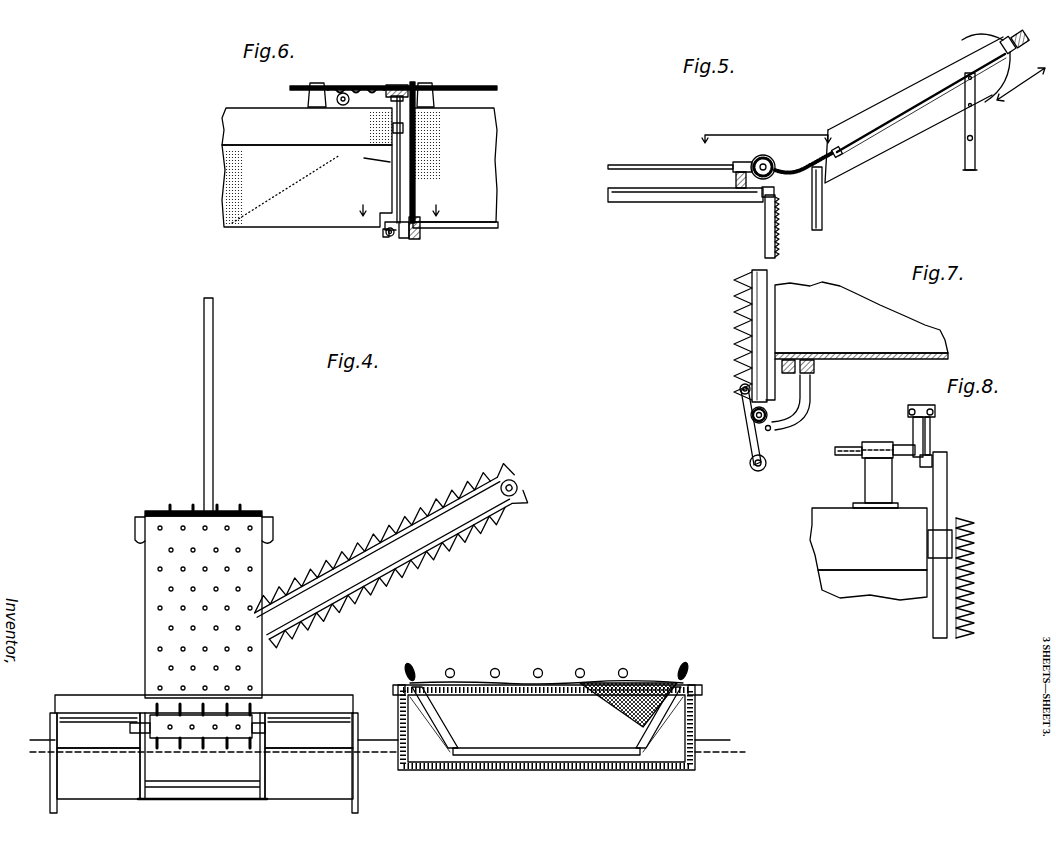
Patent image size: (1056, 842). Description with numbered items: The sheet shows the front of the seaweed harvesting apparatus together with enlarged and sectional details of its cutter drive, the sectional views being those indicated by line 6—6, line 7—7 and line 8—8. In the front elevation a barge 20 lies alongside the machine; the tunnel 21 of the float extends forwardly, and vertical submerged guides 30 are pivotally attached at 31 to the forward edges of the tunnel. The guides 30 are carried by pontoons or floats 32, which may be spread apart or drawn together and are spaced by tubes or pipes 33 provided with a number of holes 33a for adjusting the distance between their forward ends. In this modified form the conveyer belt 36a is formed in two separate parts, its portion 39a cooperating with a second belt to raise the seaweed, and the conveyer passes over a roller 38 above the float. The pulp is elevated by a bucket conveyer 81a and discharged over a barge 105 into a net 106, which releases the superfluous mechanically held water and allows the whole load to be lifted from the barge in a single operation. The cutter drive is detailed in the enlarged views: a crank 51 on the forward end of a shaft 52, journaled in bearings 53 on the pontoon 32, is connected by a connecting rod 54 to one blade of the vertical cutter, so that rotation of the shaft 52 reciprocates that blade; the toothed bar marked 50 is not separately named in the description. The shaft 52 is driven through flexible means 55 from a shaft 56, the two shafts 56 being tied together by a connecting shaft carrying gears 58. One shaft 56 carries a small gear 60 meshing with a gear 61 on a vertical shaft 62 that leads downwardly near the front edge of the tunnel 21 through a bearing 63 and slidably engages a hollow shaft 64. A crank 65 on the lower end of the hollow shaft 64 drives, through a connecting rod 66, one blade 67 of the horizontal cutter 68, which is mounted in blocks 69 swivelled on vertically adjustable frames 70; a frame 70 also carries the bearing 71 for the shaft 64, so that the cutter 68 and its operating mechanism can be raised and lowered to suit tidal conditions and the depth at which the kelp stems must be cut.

In FIG. 5, the section line 6 is at (766, 127).
In FIG. 6, the section line 7 is at (400, 205).
In FIG. 5, the section line 8 is at (1021, 97).
In FIG. 4, the barge 20 is at (90, 687).
In FIG. 6, the tunnel 21 is at (455, 168).
In FIG. 7, the tunnel 21 is at (861, 320).
In FIG. 6, the submerged guides 30 is at (307, 186).
In FIG. 8, the submerged guides 30 is at (872, 585).
In FIG. 4, the submerged guides 30 is at (205, 773).
In FIG. 5, the pivot 31 is at (765, 212).
In FIG. 5, the pontoons 32 is at (893, 142).
In FIG. 8, the pontoons 32 is at (868, 539).
In FIG. 4, the pontoons 32 is at (360, 680).
In FIG. 6, the pipes 33 is at (344, 92).
In FIG. 5, the pipes 33 is at (975, 165).
In FIG. 5, the holes 33a is at (976, 138).
In FIG. 4, the conveyer belt 36a is at (269, 581).
In FIG. 4, the roller 38 is at (265, 514).
In FIG. 4, the conveyer portion 39a is at (387, 673).
In FIG. 8, the rack bar 50 is at (970, 514).
In FIG. 5, the crank 51 is at (975, 37).
In FIG. 8, the crank 51 is at (913, 430).
In FIG. 6, the shaft 52 is at (316, 85).
In FIG. 5, the shaft 52 is at (918, 96).
In FIG. 8, the shaft 52 is at (849, 456).
In FIG. 6, the bearings 53 is at (307, 126).
In FIG. 5, the bearings 53 is at (915, 83).
In FIG. 8, the bearings 53 is at (874, 441).
In FIG. 5, the connecting rod 54 is at (1022, 36).
In FIG. 8, the connecting rod 54 is at (931, 432).
In FIG. 6, the flexible means 55 is at (372, 88).
In FIG. 5, the flexible means 55 is at (793, 178).
In FIG. 6, the shaft 56 is at (465, 86).
In FIG. 5, the shaft 56 is at (645, 164).
In FIG. 7, the gears 58 is at (721, 360).
In FIG. 6, the small gear 60 is at (428, 84).
In FIG. 5, the small gear 60 is at (745, 162).
In FIG. 6, the gear 61 is at (403, 86).
In FIG. 5, the gear 61 is at (772, 155).
In FIG. 6, the vertical shaft 62 is at (367, 157).
In FIG. 6, the bearing 63 is at (392, 126).
In FIG. 6, the hollow shaft 64 is at (396, 178).
In FIG. 7, the hollow shaft 64 is at (750, 418).
In FIG. 6, the crank 65 is at (421, 234).
In FIG. 7, the crank 65 is at (739, 402).
In FIG. 7, the connecting rod 66 is at (744, 440).
In FIG. 6, the blade 67 is at (384, 235).
In FIG. 7, the blade 67 is at (752, 322).
In FIG. 6, the horizontal cutter 68 is at (388, 238).
In FIG. 4, the horizontal cutter 68 is at (178, 800).
In FIG. 6, the blocks 69 is at (405, 240).
In FIG. 7, the blocks 69 is at (769, 432).
In FIG. 6, the frames 70 is at (416, 152).
In FIG. 7, the frames 70 is at (814, 369).
In FIG. 6, the bearing 71 is at (383, 220).
In FIG. 7, the bearing 71 is at (796, 397).
In FIG. 4, the bucket conveyer 81a is at (395, 583).
In FIG. 4, the barge 105 is at (704, 675).
In FIG. 4, the net 106 is at (634, 682).